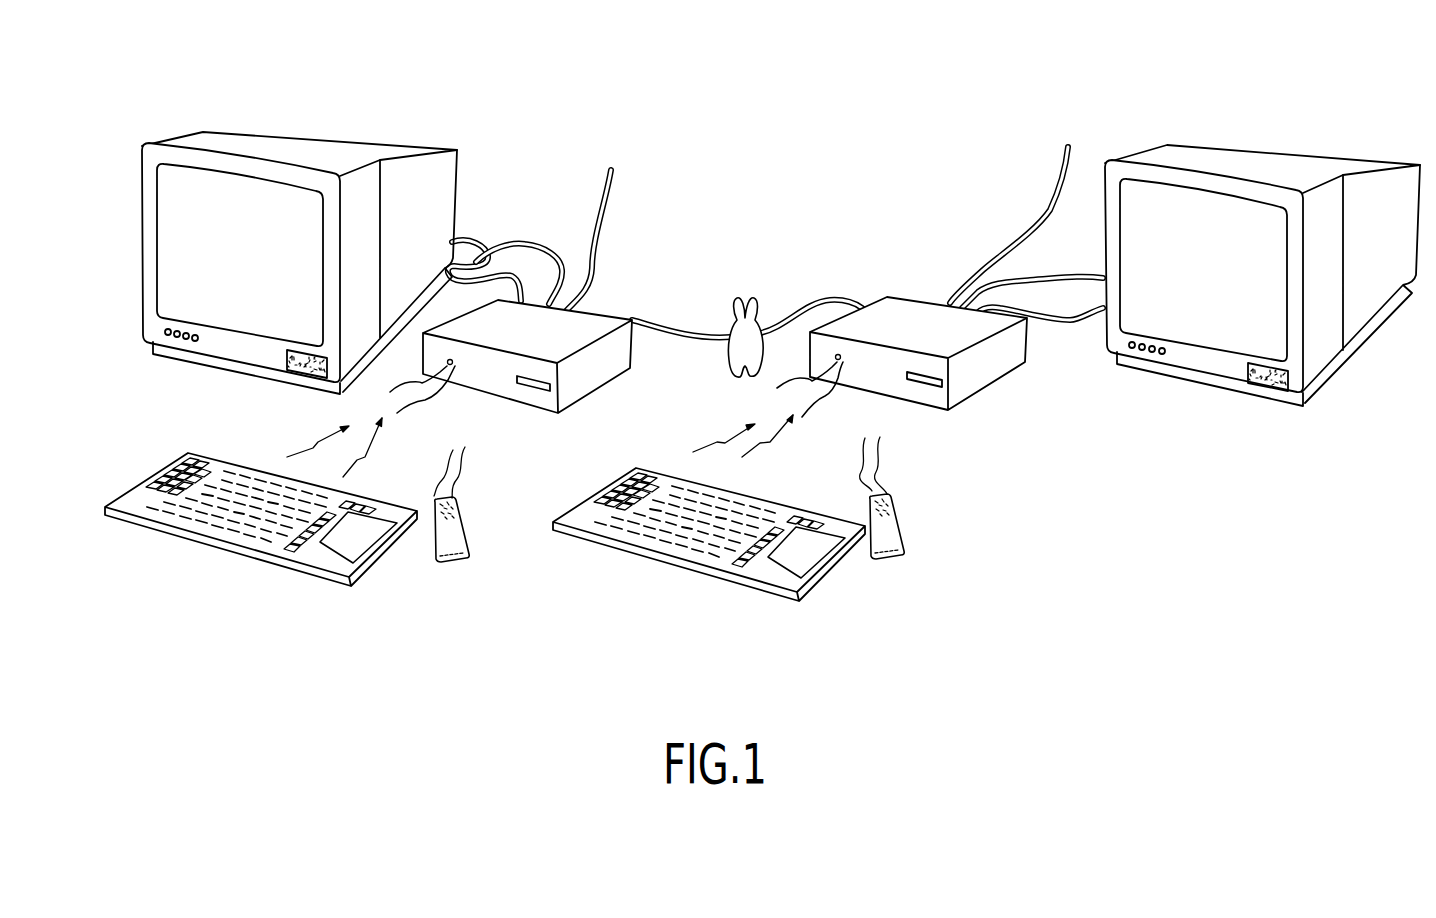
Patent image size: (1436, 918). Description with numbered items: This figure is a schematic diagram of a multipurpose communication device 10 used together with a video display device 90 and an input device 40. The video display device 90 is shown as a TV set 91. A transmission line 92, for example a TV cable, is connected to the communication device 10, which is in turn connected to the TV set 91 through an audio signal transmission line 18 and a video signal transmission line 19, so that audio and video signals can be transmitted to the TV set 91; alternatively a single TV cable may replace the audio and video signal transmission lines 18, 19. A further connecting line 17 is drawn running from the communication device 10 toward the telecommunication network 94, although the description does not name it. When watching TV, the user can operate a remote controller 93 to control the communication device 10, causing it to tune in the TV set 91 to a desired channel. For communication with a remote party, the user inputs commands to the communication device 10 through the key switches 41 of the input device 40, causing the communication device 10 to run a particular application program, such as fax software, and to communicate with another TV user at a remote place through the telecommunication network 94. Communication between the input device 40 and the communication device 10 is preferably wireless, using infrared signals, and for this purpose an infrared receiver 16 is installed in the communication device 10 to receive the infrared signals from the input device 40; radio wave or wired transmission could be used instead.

The communication device 10 is at (627, 309).
The infrared receiver 16 is at (456, 365).
The communication cable 17 is at (673, 333).
The audio signal transmission line 18 is at (483, 252).
The video signal transmission line 19 is at (543, 243).
The input device 40 is at (485, 545).
The key switches 41 is at (177, 507).
The video display device 90 is at (781, 233).
The TV set 91 is at (257, 148).
The transmission line 92 is at (608, 209).
The remote controller 93 is at (452, 552).
The telecommunication network 94 is at (763, 300).